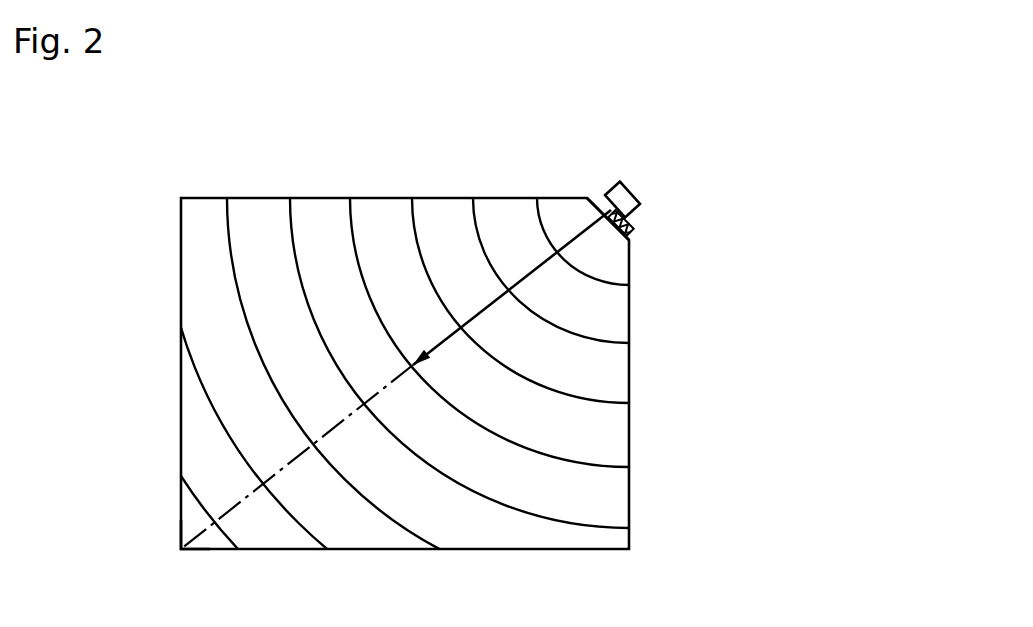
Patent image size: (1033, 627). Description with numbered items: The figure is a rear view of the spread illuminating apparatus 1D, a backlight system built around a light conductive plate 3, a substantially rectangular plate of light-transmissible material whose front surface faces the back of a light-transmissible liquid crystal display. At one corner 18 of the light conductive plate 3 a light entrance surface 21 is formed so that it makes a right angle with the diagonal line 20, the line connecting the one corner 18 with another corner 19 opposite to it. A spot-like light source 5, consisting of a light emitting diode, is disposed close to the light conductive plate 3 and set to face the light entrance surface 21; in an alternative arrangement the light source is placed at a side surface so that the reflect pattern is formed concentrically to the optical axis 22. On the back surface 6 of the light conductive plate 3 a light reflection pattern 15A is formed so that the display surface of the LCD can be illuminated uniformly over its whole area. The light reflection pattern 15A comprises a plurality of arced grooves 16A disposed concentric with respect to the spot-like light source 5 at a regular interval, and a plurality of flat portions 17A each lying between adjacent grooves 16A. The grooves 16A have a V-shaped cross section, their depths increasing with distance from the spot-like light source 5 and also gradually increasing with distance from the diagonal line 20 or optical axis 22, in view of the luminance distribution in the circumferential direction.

The spread illuminating apparatus 1D is at (570, 117).
The light conductive plate 3 is at (489, 186).
The spot-like light source 5 is at (636, 200).
The back surface 6 is at (310, 197).
The one corner 18 is at (627, 230).
The another corner 19 is at (181, 549).
The diagonal line 20 is at (300, 455).
The light entrance surface 21 is at (608, 213).
The optical axis 22 is at (520, 287).
The light reflection pattern 15A is at (790, 368).
The arced grooves 16A is at (600, 403).
The flat portions 17A is at (613, 447).